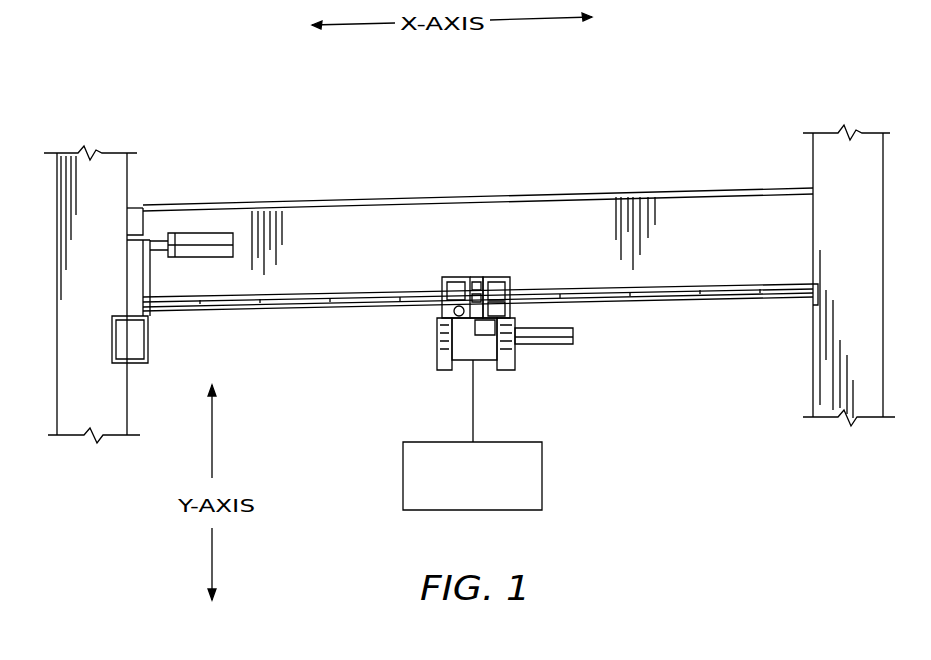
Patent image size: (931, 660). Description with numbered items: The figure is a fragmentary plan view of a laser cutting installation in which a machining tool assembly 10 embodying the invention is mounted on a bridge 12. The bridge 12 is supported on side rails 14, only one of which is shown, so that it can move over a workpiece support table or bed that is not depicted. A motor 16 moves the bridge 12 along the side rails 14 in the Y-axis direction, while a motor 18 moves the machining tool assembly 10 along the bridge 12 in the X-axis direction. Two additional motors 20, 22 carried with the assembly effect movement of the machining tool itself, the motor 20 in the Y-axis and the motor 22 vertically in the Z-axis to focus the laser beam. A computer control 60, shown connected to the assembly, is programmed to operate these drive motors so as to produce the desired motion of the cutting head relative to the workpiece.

The machining tool assembly 10 is at (489, 266).
The bridge 12 is at (335, 215).
The side rails 14 is at (128, 180).
The motor 16 is at (209, 237).
The motor 18 is at (453, 276).
The motor 20 is at (509, 282).
The motor 22 is at (575, 337).
The computer control 60 is at (447, 510).